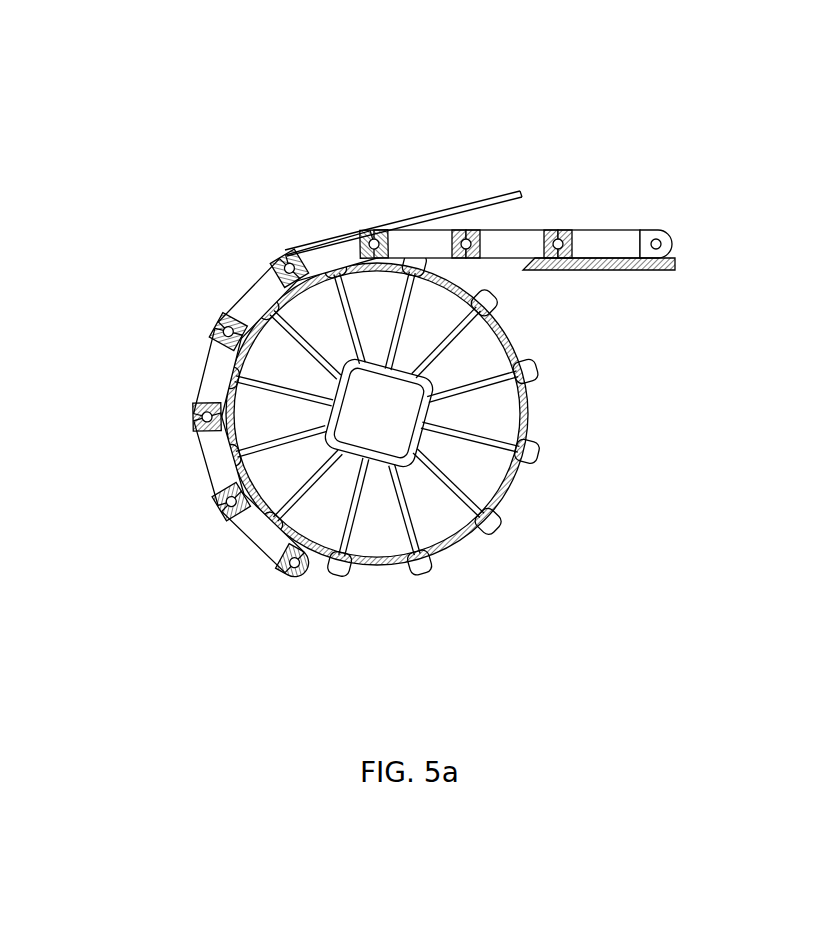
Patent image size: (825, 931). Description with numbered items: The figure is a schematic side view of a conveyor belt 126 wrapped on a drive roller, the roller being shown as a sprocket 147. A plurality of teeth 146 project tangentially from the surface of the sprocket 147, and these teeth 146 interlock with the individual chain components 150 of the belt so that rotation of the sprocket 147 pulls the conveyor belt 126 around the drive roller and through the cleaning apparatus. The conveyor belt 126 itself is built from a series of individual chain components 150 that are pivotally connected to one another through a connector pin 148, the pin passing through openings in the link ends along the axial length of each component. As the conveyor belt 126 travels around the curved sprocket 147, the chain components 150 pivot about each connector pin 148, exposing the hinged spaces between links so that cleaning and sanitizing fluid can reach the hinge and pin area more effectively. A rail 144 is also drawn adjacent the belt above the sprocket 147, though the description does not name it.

The track assembly 126 is at (290, 233).
The guide rail 144 is at (433, 208).
The sprocket teeth 146 is at (497, 530).
The sprocket wheel 147 is at (381, 592).
The track links 148 is at (213, 330).
The mounting bar 150 is at (617, 247).